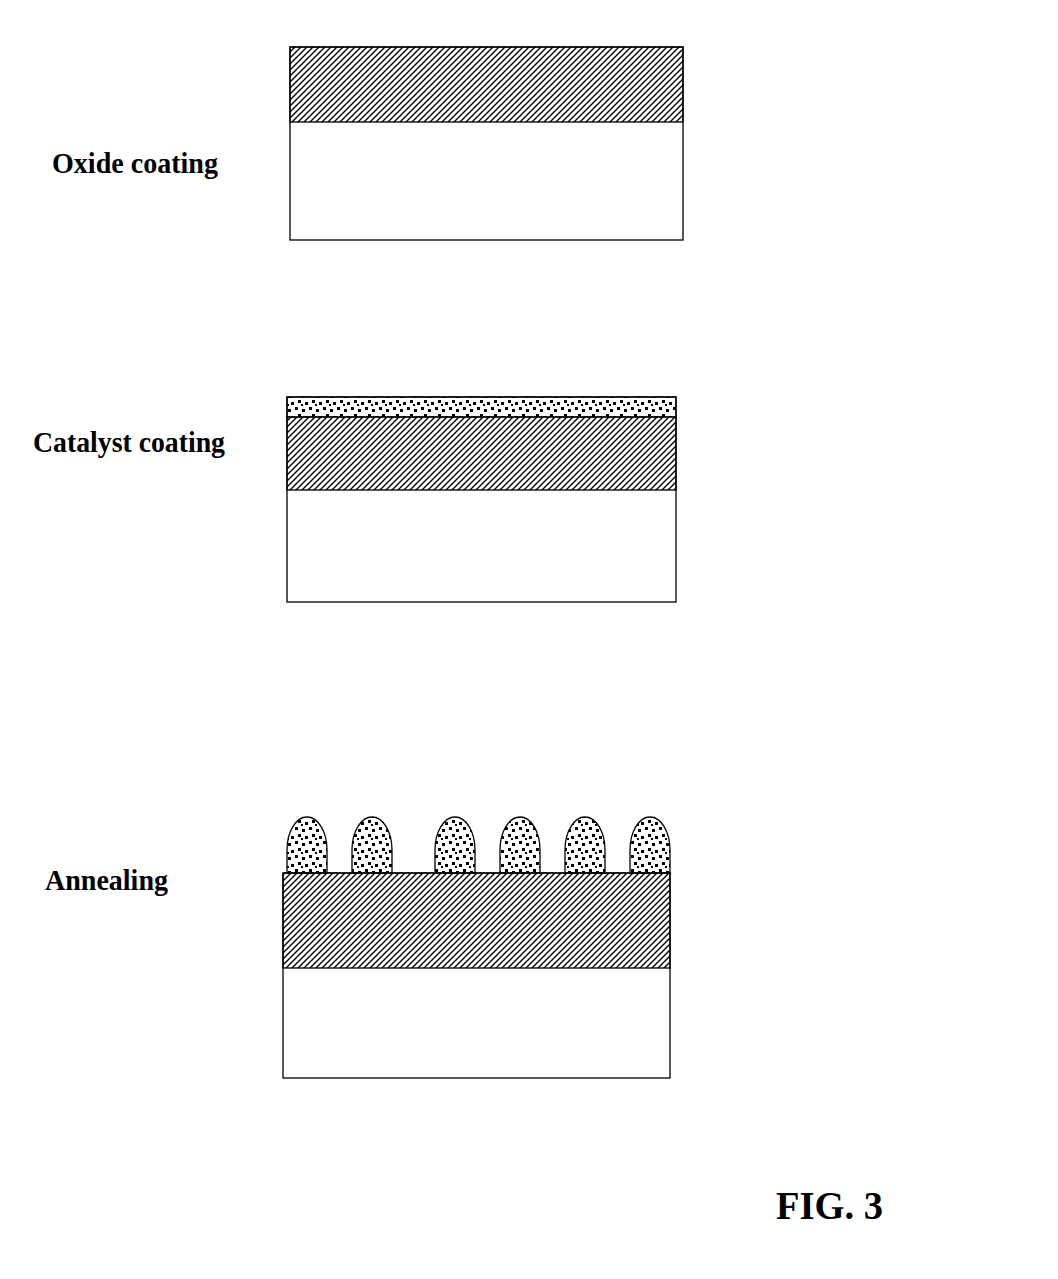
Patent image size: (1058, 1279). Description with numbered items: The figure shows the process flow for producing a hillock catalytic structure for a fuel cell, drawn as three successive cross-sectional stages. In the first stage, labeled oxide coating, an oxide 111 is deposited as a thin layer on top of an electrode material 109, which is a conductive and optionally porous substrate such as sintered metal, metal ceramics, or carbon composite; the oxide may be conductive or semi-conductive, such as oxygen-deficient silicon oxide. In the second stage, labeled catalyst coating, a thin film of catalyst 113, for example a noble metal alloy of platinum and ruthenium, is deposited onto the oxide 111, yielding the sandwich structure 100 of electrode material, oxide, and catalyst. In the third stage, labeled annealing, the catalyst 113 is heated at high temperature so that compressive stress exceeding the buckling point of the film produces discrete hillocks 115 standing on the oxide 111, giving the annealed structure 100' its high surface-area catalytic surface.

The electrode material 109 is at (483, 562).
The oxide 111 is at (682, 80).
The catalyst 113 is at (528, 399).
The hillocks 115 is at (365, 818).
The sandwich structure 100 is at (572, 499).
The annealed hillock structure 100' is at (561, 951).